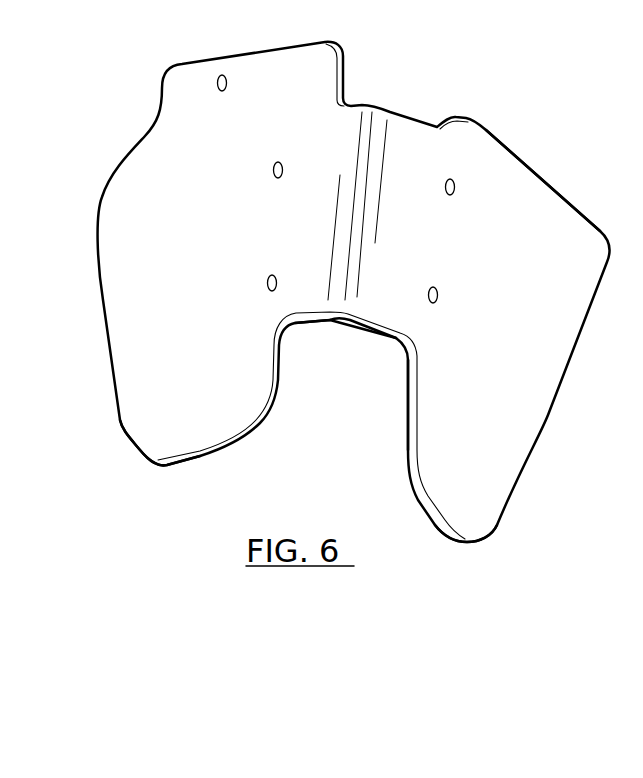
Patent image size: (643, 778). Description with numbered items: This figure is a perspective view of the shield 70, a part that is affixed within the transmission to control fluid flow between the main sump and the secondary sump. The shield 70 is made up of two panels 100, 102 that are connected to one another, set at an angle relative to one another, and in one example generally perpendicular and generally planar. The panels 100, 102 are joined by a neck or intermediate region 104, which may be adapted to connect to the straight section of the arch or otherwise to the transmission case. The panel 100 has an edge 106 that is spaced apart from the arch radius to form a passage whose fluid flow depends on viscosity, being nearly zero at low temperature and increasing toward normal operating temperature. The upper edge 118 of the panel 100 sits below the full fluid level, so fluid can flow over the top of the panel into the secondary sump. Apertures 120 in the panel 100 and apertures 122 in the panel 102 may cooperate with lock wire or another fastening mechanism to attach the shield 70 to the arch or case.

The shield 70 is at (407, 62).
The apertures 122 is at (267, 283).
The apertures 120 is at (438, 292).
The upper edge 118 is at (571, 203).
The intermediate region 104 is at (387, 305).
The panel 102 is at (200, 428).
The edge 106 is at (410, 492).
The panel 100 is at (462, 490).